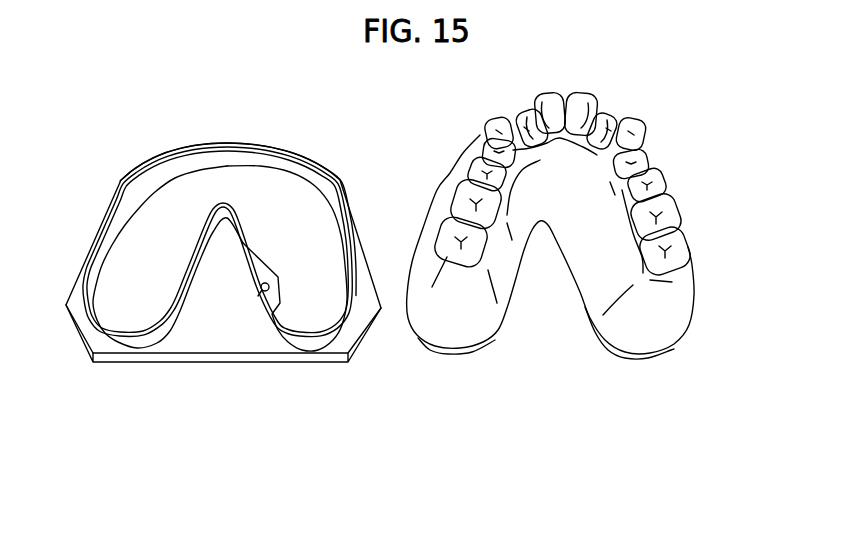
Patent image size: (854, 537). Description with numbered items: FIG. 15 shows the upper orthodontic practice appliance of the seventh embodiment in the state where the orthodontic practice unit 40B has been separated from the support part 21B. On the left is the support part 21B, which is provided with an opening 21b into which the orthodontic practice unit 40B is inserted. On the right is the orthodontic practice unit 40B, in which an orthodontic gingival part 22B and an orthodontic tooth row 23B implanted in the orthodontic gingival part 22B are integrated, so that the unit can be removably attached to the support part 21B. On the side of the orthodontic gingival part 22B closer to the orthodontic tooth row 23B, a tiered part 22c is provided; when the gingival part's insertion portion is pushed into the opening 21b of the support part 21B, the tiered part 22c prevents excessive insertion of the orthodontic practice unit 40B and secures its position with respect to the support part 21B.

The support part 21B is at (223, 262).
The opening 21b is at (338, 238).
The orthodontic gingival part 22B is at (551, 274).
The tiered part 22c is at (605, 343).
The orthodontic tooth row 23B is at (646, 151).
The orthodontic practice unit 40B is at (585, 253).